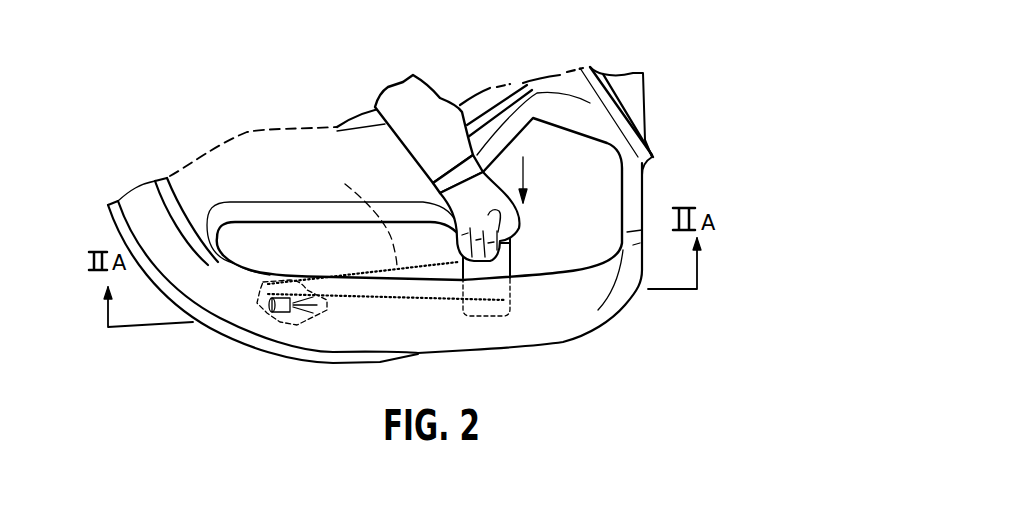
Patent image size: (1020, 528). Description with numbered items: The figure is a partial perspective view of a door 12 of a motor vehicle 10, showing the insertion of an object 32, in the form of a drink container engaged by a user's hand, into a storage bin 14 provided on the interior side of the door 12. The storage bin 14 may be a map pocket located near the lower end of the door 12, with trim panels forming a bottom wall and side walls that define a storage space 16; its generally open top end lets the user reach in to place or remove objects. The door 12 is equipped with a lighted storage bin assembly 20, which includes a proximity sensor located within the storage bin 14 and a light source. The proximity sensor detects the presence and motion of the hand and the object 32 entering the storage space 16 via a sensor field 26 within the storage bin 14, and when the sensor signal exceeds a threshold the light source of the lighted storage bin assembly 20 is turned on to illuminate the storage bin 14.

The vehicle 10 is at (687, 52).
The door 12 is at (137, 210).
The storage bin 14 is at (585, 288).
The storage space 16 is at (583, 223).
The lighted storage bin assembly 20 is at (247, 315).
The sensor field 26 is at (360, 217).
The object 32 is at (510, 263).